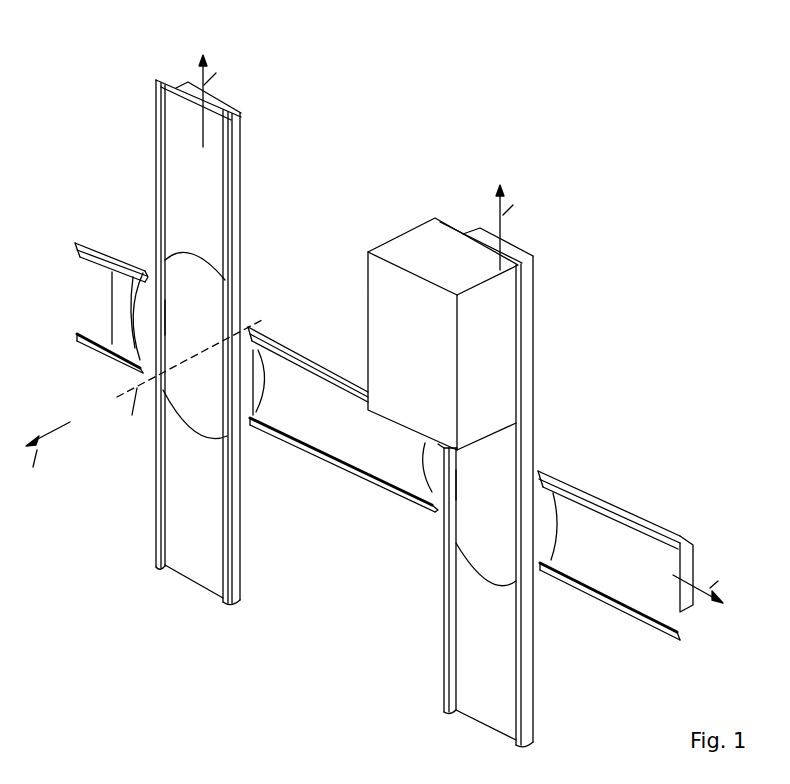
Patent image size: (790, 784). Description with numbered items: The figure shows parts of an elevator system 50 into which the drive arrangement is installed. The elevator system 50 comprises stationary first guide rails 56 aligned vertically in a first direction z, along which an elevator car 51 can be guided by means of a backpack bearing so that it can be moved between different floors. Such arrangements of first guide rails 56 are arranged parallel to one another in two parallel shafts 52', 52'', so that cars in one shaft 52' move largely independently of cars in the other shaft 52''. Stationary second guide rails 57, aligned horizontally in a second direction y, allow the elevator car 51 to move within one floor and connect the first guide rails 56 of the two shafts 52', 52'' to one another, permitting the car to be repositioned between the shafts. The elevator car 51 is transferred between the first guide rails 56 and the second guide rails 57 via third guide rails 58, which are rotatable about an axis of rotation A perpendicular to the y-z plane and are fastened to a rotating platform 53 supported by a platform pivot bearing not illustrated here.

The elevator system 50 is at (677, 102).
The elevator car 51 is at (431, 359).
The shaft 52' is at (224, 342).
The shaft 52'' is at (512, 484).
The rotating platform 53 is at (209, 386).
The first guide rails 56 is at (225, 220).
The second guide rails 57 is at (81, 262).
The third guide rails 58 is at (223, 315).